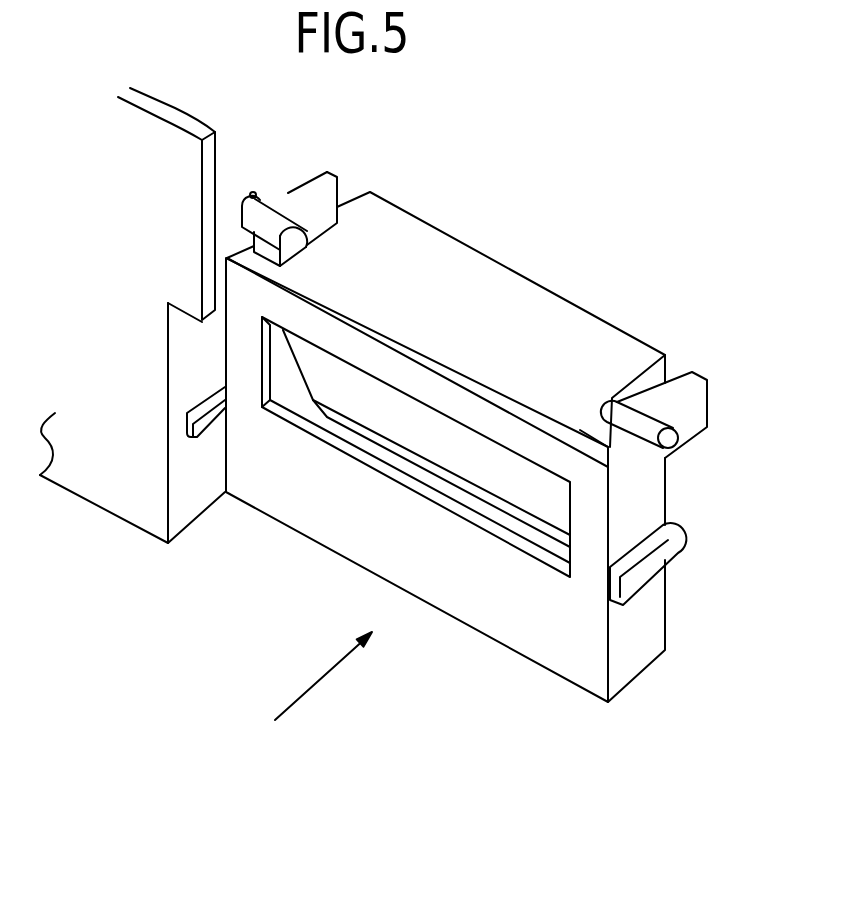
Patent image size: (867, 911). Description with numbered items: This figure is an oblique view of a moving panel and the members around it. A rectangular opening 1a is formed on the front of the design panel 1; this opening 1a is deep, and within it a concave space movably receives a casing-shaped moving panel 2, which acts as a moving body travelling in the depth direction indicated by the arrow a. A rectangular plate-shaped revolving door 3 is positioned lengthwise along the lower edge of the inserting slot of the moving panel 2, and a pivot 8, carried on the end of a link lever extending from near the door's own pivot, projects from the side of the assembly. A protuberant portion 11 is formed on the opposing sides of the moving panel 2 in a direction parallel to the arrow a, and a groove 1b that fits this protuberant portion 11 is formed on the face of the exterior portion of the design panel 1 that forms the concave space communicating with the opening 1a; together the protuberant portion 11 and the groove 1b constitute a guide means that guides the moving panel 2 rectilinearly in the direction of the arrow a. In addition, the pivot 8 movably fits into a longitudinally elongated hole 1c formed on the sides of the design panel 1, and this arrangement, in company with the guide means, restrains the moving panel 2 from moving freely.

The design panel 1 is at (128, 507).
The rectangular opening 1a is at (187, 350).
The groove 1b is at (196, 428).
The longitudinally elongated hole 1c is at (253, 192).
The moving panel 2 is at (555, 660).
The revolving door 3 is at (523, 493).
The pivot 8 is at (267, 217).
The protuberant portion 11 is at (223, 390).
The arrow a is at (328, 672).